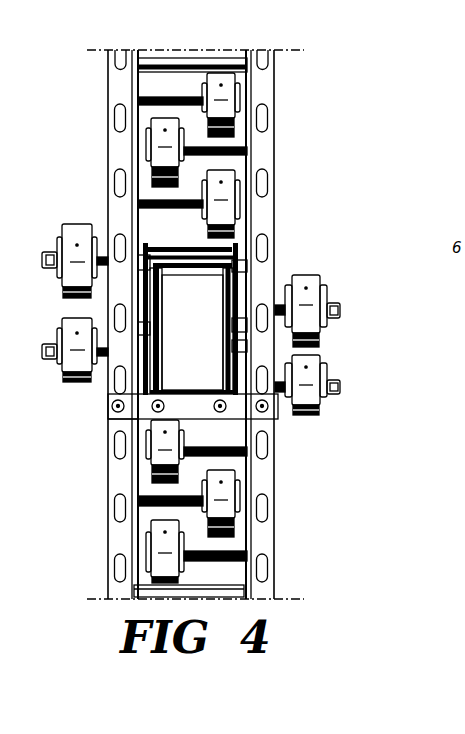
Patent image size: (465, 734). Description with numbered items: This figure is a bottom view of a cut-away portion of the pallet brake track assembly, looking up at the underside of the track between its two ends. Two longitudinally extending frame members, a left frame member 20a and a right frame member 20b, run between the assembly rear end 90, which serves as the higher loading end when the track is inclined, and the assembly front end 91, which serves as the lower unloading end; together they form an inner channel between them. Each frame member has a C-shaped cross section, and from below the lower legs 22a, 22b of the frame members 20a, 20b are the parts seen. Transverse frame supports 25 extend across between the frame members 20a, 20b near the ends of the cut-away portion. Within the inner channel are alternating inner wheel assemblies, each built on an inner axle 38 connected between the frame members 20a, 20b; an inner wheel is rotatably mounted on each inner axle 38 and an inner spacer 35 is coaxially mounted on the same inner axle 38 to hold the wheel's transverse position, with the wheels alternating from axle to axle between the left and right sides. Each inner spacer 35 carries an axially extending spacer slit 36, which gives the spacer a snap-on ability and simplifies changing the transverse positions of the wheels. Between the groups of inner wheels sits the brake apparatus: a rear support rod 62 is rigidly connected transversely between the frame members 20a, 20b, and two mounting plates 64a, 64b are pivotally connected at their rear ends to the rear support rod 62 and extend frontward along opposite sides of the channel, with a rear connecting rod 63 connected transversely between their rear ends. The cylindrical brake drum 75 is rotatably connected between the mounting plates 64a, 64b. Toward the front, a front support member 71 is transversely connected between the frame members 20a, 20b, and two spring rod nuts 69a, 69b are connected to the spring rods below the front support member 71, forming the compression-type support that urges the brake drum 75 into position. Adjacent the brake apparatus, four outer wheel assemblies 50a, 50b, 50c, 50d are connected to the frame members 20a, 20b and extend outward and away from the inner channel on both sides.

The left frame member 20a is at (276, 80).
The right frame member 20b is at (110, 78).
The lower leg 22a is at (266, 92).
The lower leg 22b is at (113, 95).
The transverse frame support 25 is at (175, 62).
The inner spacer 35 is at (237, 164).
The spacer slit 36 is at (274, 135).
The inner axle 38 is at (236, 151).
The outer wheel assembly 50a is at (51, 243).
The outer wheel assembly 50b is at (332, 293).
The outer wheel assembly 50c is at (47, 369).
The outer wheel assembly 50d is at (332, 371).
The rear support rod 62 is at (227, 246).
The rear connecting rod 63 is at (249, 238).
The mounting plate 64a is at (233, 292).
The mounting plate 64b is at (153, 294).
The spring rod nut 69a is at (230, 420).
The spring rod nut 69b is at (150, 419).
The front support member 71 is at (200, 408).
The brake drum 75 is at (107, 368).
The assembly rear end 90 is at (227, 38).
The assembly front end 91 is at (118, 606).